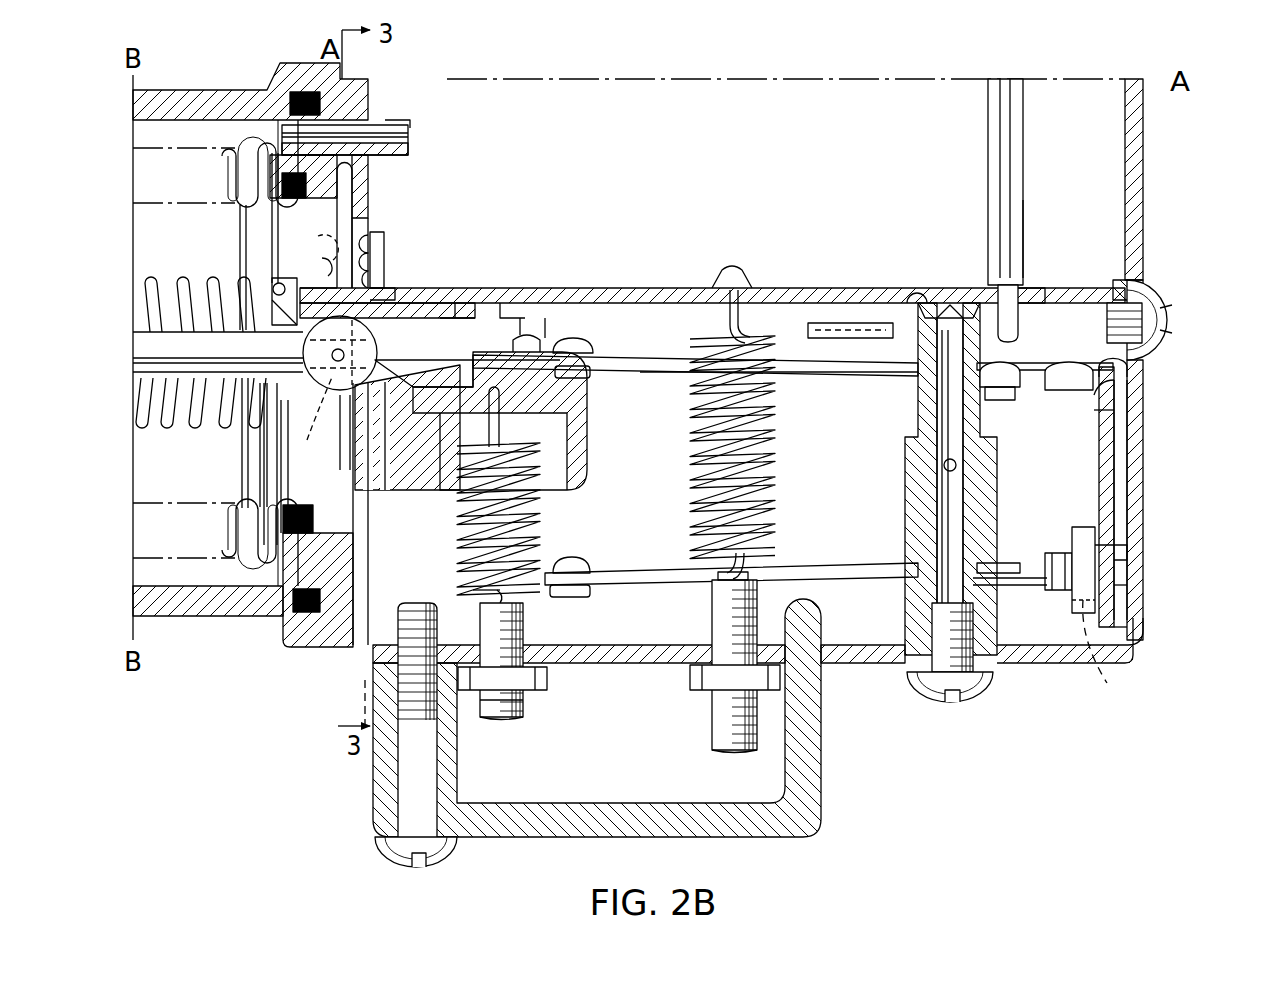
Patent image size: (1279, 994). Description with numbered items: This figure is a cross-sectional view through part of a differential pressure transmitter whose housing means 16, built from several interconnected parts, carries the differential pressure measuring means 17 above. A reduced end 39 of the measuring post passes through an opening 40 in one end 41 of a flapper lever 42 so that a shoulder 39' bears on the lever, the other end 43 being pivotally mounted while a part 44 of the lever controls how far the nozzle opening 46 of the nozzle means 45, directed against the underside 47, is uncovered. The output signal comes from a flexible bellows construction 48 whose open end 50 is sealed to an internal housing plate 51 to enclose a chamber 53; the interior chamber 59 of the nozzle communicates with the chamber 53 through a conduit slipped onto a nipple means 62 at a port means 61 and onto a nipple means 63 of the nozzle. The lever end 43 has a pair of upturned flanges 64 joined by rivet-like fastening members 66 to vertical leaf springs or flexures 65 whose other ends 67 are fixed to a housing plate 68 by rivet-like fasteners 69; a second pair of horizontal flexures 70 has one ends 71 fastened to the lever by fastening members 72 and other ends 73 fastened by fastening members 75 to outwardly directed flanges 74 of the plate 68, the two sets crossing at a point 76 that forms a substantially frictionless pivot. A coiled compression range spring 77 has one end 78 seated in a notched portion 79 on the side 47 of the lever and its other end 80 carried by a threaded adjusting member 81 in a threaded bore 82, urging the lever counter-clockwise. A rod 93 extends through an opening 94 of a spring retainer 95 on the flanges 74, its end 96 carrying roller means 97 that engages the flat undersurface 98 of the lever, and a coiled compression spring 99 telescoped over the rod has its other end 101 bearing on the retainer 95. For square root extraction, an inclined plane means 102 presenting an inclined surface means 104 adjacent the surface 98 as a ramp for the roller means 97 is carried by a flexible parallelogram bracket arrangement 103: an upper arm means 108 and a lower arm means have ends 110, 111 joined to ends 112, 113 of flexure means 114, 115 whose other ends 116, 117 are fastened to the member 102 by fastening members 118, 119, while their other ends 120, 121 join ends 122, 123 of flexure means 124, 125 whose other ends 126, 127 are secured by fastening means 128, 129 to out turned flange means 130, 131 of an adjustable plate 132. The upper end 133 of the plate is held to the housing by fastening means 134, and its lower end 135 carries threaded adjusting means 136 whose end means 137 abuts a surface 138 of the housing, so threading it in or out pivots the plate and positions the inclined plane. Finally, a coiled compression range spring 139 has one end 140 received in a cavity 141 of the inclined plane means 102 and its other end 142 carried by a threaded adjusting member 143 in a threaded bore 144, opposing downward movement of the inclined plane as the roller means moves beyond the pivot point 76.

The housing means 16 is at (1143, 192).
The differential pressure measuring means 17 is at (1175, 147).
The reduced end 39 is at (1039, 313).
The shoulder 39' is at (981, 182).
The opening 40 is at (1022, 285).
The end 41 is at (1040, 299).
The flapper lever 42 is at (800, 288).
The other end 43 is at (450, 305).
The part 44 is at (915, 290).
The nozzle means 45 is at (912, 332).
The nozzle opening 46 is at (955, 305).
The underside 47 is at (918, 300).
The flexible bellows construction 48 is at (245, 148).
The open end 50 is at (340, 512).
The internal housing plate 51 is at (335, 540).
The chamber 53 is at (200, 115).
The interior chamber 59 is at (935, 497).
The port means 61 is at (372, 135).
The nipple means 62 is at (402, 128).
The nipple means 63 is at (982, 450).
The upturned flanges 64 is at (387, 258).
The leaf springs or flexures 65 is at (386, 272).
The rivet-like fastening members 66 is at (378, 232).
The other ends 67 is at (378, 351).
The housing plate 68 is at (358, 600).
The rivet-like fasteners 69 is at (300, 350).
The flexures 70 is at (385, 318).
The one ends 71 is at (458, 303).
The fastening members 72 is at (445, 300).
The other ends 73 is at (330, 245).
The outwardly directed flanges 74 is at (320, 288).
The fastening members 75 is at (327, 272).
The pivot point 76 is at (378, 298).
The coiled compression range spring 77 is at (776, 456).
The one end 78 is at (724, 282).
The notched portion 79 is at (730, 265).
The other end 80 is at (748, 567).
The threaded adjusting member 81 is at (712, 727).
The threaded bore 82 is at (702, 648).
The rod 93 is at (194, 285).
The opening 94 is at (262, 412).
The spring retainer 95 is at (282, 405).
The end 96 is at (311, 416).
The roller means 97 is at (333, 400).
The flat undersurface 98 is at (512, 300).
The coiled compression spring 99 is at (192, 428).
The other end 101 is at (274, 286).
The inclined plane means 102 is at (590, 458).
The flexible parallelogram bracket arrangement 103 is at (650, 380).
The inclined surface means 104 is at (407, 427).
The upper arm means 108 is at (822, 377).
The end 110 is at (545, 348).
The end 111 is at (555, 556).
The end 112 is at (594, 351).
The end 113 is at (598, 580).
The flexure means 114 is at (547, 335).
The flexure means 115 is at (545, 592).
The other end 116 is at (532, 338).
The other end 117 is at (473, 589).
The fastening member 118 is at (527, 340).
The fastening member 119 is at (495, 603).
The other end 120 is at (1012, 363).
The other end 121 is at (1020, 575).
The end 122 is at (995, 400).
The end 123 is at (1000, 592).
The flexure means 124 is at (1062, 392).
The flexure means 125 is at (1045, 572).
The other end 126 is at (1128, 370).
The other end 127 is at (1116, 649).
The fastening means 128 is at (1117, 420).
The fastening means 129 is at (1030, 642).
The out turned flange means 130 is at (1118, 385).
The out turned flange means 131 is at (1110, 537).
The adjustable plate 132 is at (1114, 482).
The upper end 133 is at (1142, 289).
The fastening means 134 is at (1170, 342).
The lower end 135 is at (1135, 627).
The threaded adjusting means 136 is at (1128, 548).
The end means 137 is at (1128, 592).
The surface 138 is at (1121, 490).
The coiled compression range spring 139 is at (542, 547).
The one end 140 is at (522, 417).
The cavity 141 is at (560, 385).
The other end 142 is at (525, 612).
The threaded adjusting member 143 is at (548, 677).
The threaded bore 144 is at (524, 704).